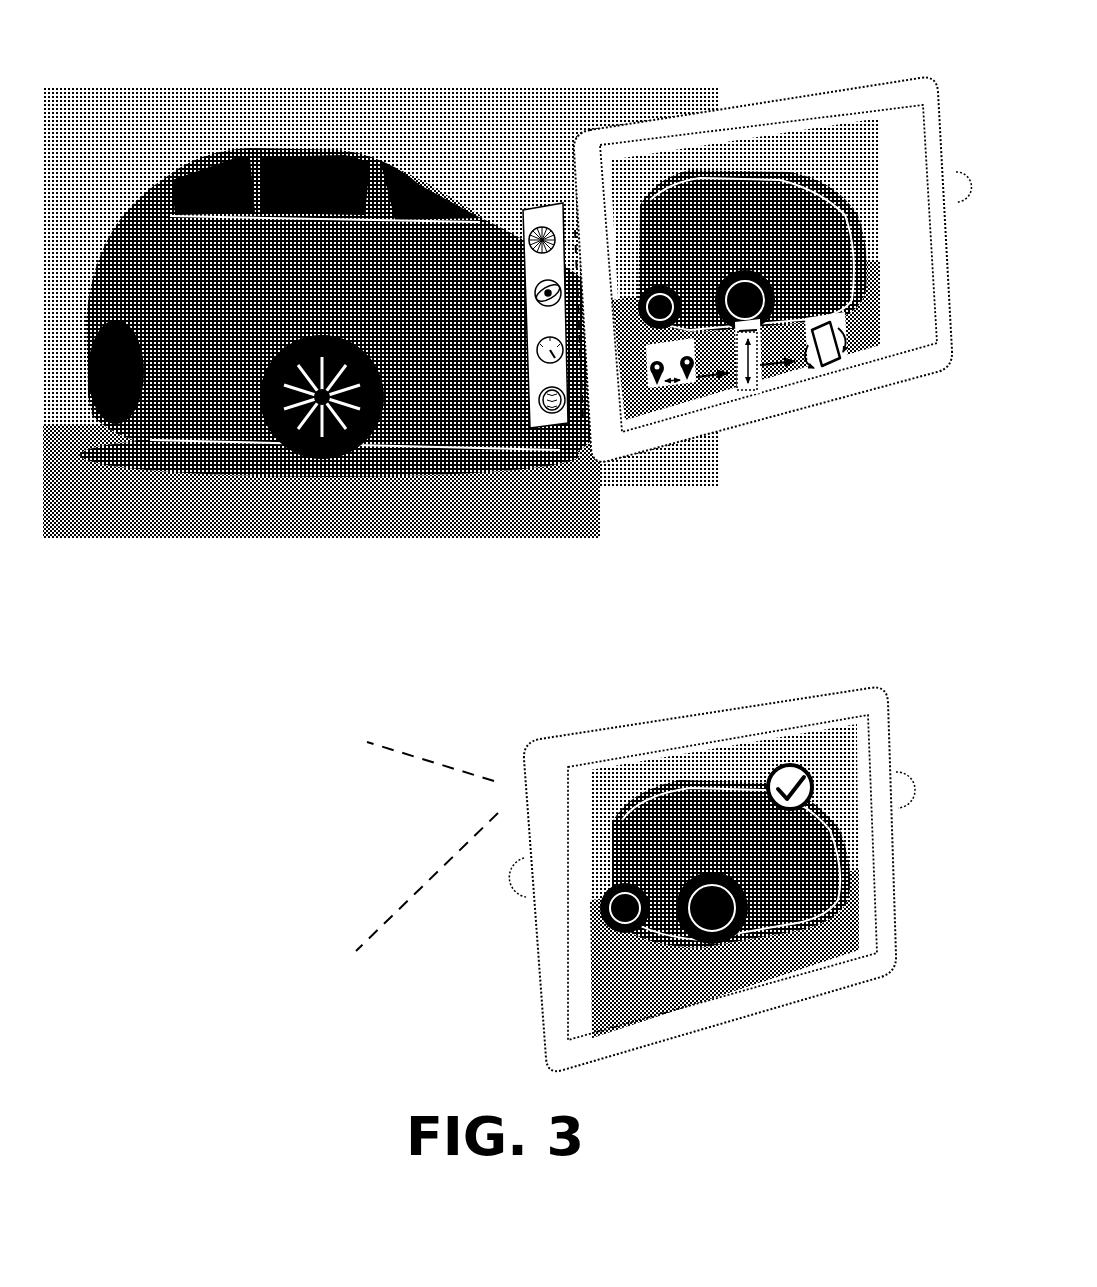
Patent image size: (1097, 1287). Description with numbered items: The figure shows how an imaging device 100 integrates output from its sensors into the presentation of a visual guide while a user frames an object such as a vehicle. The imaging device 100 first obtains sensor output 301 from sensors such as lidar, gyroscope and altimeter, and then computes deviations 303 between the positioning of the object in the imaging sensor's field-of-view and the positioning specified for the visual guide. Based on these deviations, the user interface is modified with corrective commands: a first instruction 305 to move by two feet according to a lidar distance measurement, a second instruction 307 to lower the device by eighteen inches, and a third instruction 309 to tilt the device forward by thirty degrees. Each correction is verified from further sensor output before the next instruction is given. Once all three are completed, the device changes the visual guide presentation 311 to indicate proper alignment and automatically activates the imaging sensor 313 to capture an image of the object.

The imaging device 100 is at (823, 90).
The obtaining sensor output 301 is at (549, 462).
The computing deviations 303 is at (630, 392).
The first instruction 305 is at (667, 492).
The second instruction 307 is at (758, 556).
The third instruction 309 is at (868, 462).
The changing the visual guide presentation 311 is at (884, 517).
The activating the imaging sensor 313 is at (503, 805).